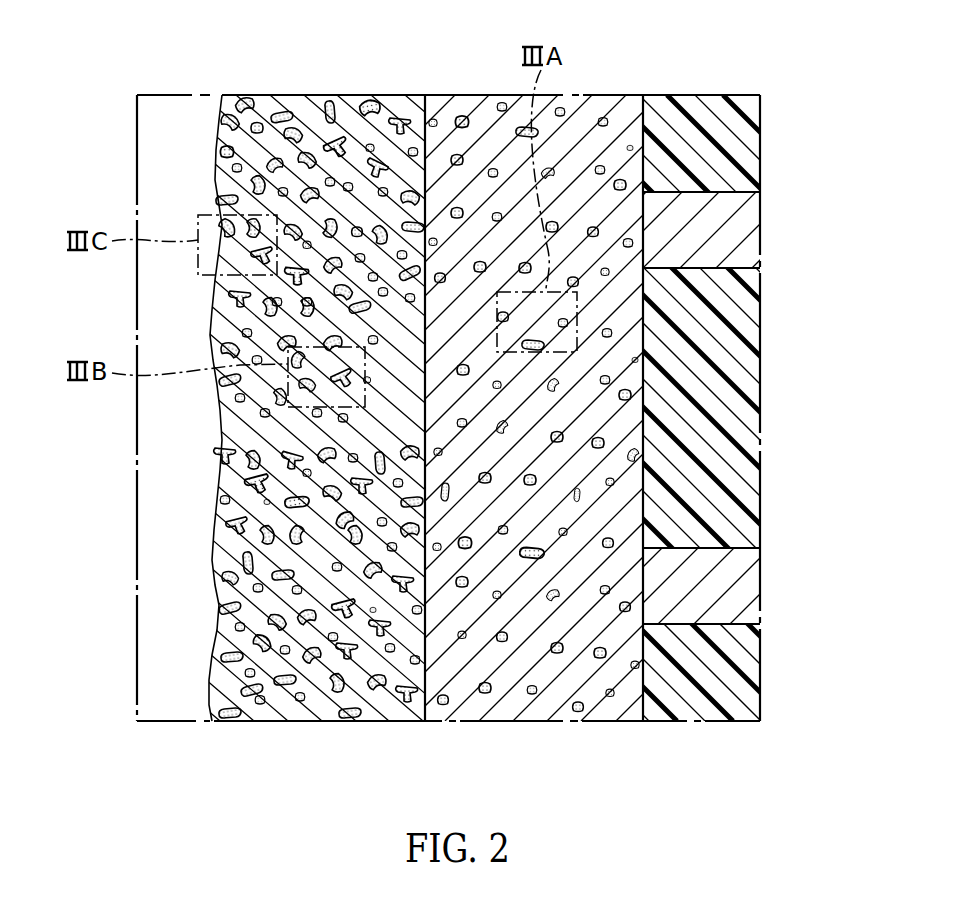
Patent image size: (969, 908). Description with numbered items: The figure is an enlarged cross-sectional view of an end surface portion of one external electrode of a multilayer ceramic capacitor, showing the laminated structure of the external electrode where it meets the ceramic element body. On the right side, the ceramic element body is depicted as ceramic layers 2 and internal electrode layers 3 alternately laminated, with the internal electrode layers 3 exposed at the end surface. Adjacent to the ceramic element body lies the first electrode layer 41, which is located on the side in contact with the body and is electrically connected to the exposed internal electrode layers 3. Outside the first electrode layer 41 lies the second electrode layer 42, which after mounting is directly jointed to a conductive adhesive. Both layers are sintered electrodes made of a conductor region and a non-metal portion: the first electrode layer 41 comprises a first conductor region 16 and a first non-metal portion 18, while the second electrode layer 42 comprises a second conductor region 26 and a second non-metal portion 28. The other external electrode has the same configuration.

The ceramic layer 2 is at (735, 420).
The internal electrode layer 3 is at (735, 232).
The first conductor region 16 is at (505, 695).
The first non-metal portion 18 is at (530, 690).
The second conductor region 26 is at (279, 700).
The second non-metal portion 28 is at (333, 690).
The first electrode layer 41 is at (615, 721).
The second electrode layer 42 is at (390, 721).